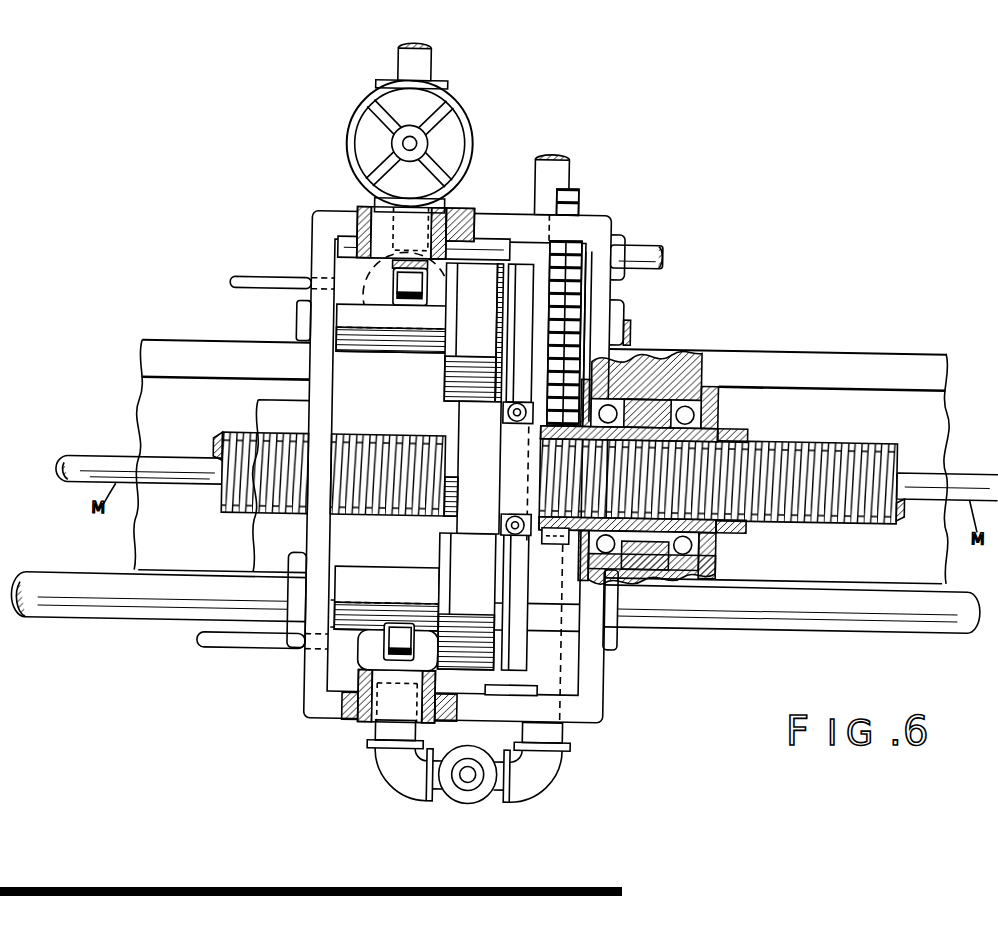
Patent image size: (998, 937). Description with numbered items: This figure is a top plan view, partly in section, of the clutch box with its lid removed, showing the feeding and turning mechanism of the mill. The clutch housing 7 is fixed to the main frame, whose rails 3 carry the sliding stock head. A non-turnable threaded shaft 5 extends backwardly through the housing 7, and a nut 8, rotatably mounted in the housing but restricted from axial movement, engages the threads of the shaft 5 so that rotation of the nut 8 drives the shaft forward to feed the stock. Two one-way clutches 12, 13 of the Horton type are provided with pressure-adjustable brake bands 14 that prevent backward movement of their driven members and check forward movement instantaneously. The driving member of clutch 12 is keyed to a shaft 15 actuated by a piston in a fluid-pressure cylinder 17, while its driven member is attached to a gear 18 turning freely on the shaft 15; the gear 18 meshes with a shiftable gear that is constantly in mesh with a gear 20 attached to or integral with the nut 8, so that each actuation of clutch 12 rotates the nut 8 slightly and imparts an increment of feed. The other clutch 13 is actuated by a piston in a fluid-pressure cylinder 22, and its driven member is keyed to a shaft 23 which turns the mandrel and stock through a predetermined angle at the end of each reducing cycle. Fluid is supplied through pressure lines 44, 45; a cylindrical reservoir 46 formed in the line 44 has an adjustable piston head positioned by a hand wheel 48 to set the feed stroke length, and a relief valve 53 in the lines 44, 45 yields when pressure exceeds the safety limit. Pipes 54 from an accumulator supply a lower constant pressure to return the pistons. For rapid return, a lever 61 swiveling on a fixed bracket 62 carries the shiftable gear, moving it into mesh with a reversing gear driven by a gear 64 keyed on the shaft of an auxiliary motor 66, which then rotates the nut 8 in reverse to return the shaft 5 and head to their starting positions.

The rails 3 is at (182, 346).
The threaded shaft 5 is at (248, 437).
The clutch housing 7 is at (316, 214).
The nut 8 is at (749, 437).
The one-way clutch 12 is at (473, 332).
The one-way clutch 13 is at (467, 601).
The brake bands 14 is at (534, 492).
The shaft 15 is at (628, 330).
The fluid-pressure cylinder 17 is at (368, 296).
The gear 18 is at (592, 308).
The gear 20 is at (565, 545).
The fluid-pressure cylinder 22 is at (376, 664).
The shaft 23 is at (122, 625).
The pressure line 44 is at (391, 70).
The pressure line 45 is at (534, 184).
The cylindrical reservoir 46 is at (444, 130).
The hand wheel 48 is at (346, 126).
The relief valve 53 is at (502, 802).
The pipes 54 is at (263, 281).
The lever 61 is at (479, 467).
The fixed bracket 62 is at (420, 530).
The gear 64 is at (576, 195).
The auxiliary motor 66 is at (652, 248).